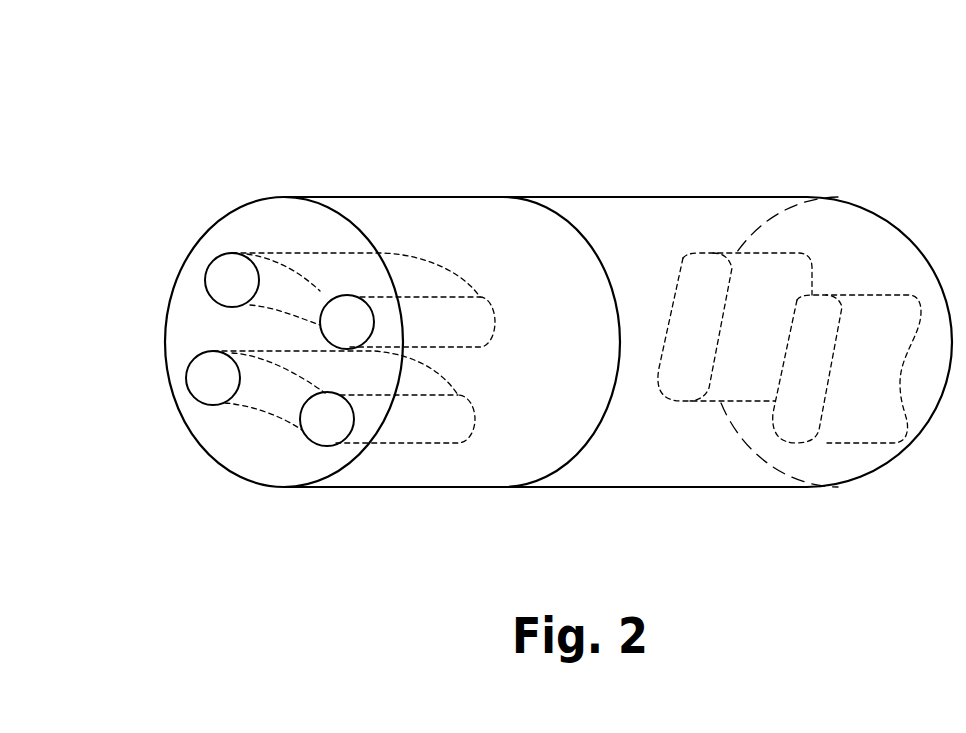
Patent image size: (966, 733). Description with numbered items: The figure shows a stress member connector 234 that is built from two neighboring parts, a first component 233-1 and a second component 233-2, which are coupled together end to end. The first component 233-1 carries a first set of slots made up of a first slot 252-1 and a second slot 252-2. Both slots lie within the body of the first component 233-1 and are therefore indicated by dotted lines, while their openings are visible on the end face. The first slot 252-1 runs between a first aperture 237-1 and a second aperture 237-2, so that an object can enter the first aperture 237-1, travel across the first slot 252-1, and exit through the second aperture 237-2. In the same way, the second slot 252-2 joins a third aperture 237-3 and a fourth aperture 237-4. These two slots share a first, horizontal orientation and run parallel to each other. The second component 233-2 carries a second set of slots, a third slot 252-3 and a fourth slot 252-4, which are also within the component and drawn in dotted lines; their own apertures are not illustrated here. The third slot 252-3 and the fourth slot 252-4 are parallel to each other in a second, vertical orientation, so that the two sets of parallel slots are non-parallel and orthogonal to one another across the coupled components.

The stress member connector 234 is at (250, 84).
The first component 233-1 is at (495, 465).
The second component 233-2 is at (662, 470).
The first aperture 237-1 is at (225, 267).
The second aperture 237-2 is at (335, 310).
The third aperture 237-3 is at (215, 372).
The fourth aperture 237-4 is at (332, 425).
The first slot 252-1 is at (415, 273).
The second slot 252-2 is at (422, 408).
The third slot 252-3 is at (758, 265).
The fourth slot 252-4 is at (852, 413).